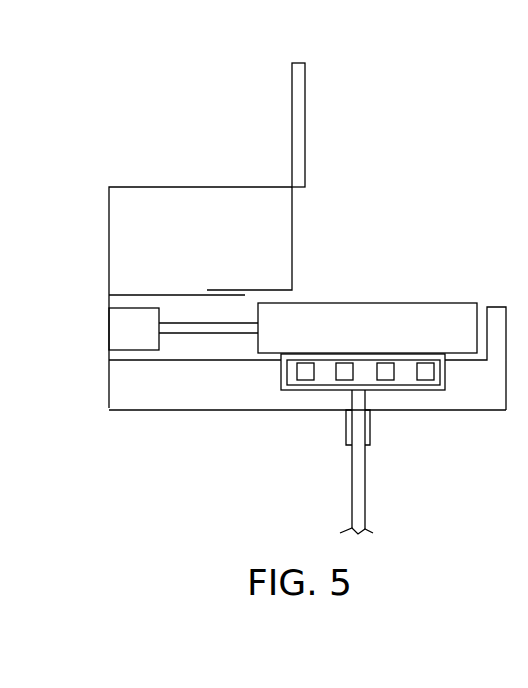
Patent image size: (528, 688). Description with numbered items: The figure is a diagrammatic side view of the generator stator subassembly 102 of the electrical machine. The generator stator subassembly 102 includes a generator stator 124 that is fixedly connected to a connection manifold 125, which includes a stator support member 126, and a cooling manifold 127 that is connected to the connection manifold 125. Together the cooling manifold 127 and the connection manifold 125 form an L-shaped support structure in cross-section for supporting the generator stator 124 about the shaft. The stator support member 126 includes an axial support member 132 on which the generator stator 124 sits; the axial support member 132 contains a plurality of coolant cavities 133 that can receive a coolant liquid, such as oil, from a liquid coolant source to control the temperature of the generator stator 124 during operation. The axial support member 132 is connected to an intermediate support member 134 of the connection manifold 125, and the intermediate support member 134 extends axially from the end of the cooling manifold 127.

The generator stator subassembly 102 is at (285, 235).
The generator stator 124 is at (448, 303).
The connection manifold 125 is at (318, 456).
The stator support member 126 is at (407, 378).
The cooling manifold 127 is at (165, 405).
The axial support member 132 is at (347, 313).
The coolant cavities 133 is at (431, 374).
The intermediate support member 134 is at (237, 361).